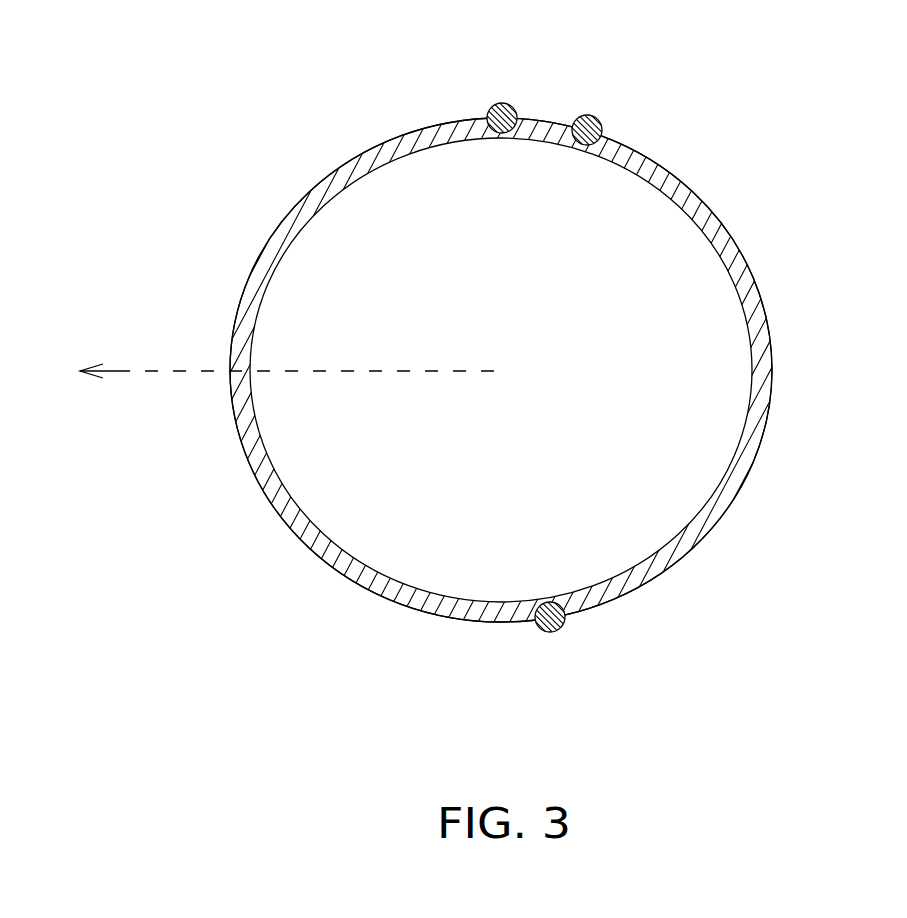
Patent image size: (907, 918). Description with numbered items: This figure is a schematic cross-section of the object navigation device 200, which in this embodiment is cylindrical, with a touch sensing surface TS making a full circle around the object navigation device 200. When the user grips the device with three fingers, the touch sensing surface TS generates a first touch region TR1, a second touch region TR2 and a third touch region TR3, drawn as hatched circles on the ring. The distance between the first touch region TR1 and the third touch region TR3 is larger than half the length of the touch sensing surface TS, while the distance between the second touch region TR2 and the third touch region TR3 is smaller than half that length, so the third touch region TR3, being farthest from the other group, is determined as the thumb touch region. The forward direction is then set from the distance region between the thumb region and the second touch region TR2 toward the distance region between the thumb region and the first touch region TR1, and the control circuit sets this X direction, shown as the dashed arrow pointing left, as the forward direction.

The object navigation device 200 is at (775, 372).
The touch sensing surface TS is at (737, 259).
The first touch region TR1 is at (500, 103).
The second touch region TR2 is at (587, 115).
The third touch region TR3 is at (553, 633).
The X direction X is at (290, 355).